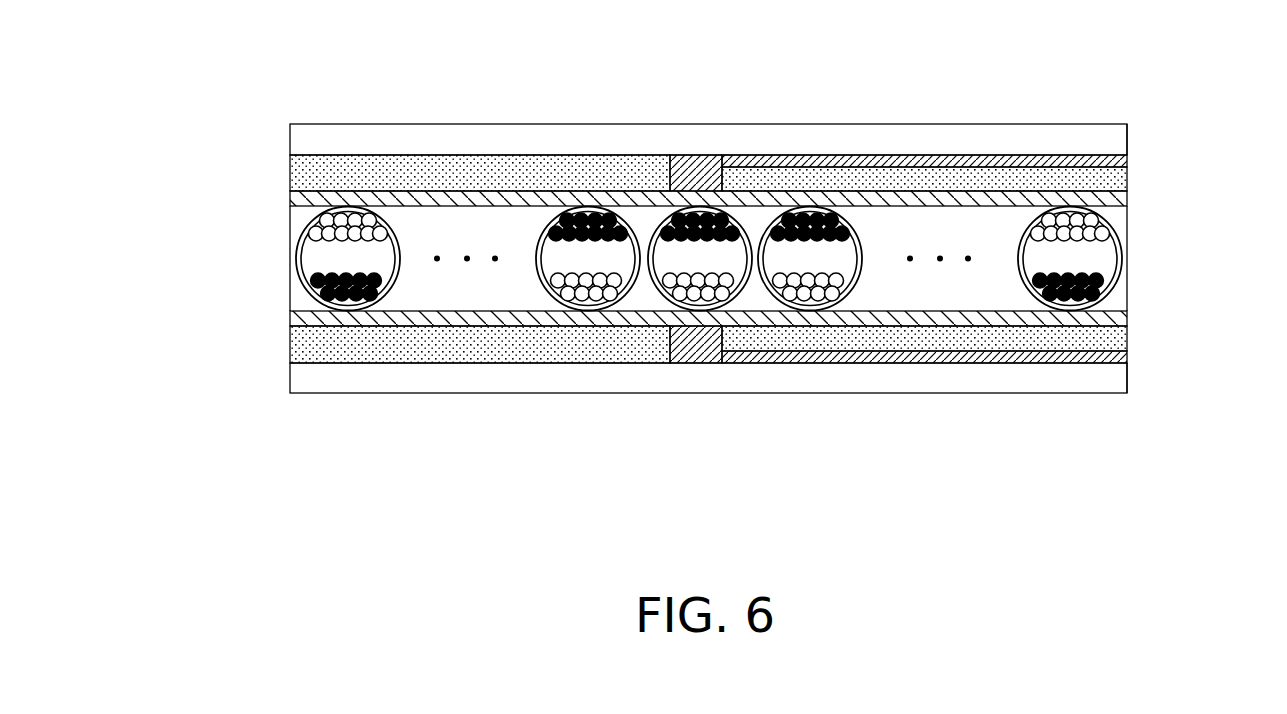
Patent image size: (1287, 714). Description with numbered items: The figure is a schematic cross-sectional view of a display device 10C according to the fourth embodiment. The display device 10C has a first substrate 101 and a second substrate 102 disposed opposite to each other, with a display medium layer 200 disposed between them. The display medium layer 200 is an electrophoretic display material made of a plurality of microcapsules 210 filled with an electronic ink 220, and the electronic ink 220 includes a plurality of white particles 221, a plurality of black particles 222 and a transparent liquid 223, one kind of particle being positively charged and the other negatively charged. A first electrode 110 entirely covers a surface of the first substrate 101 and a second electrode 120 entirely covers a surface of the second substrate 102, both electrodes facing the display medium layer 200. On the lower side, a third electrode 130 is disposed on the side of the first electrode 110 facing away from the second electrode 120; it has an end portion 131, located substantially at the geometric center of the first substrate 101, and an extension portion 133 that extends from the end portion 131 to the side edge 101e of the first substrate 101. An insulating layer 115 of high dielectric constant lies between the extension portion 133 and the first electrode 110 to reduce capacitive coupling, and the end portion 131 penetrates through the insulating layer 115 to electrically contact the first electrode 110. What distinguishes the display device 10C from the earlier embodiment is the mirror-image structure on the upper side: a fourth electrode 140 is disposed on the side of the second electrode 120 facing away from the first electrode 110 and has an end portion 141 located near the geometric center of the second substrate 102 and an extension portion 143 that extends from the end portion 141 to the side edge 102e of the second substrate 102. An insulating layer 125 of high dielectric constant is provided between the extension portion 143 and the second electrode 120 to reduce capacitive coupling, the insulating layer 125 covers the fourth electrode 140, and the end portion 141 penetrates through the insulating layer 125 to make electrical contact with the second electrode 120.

The display device 10C is at (1249, 537).
The first substrate 101 is at (1035, 383).
The side edge of the first substrate 101e is at (1130, 377).
The second substrate 102 is at (1117, 147).
The side edge of the second substrate 102e is at (1130, 127).
The first electrode 110 is at (1117, 318).
The insulating layer 115 is at (1117, 339).
The second electrode 120 is at (1117, 200).
The insulating layer 125 is at (1117, 180).
The third electrode 130 is at (898, 418).
The end portion 131 is at (695, 352).
The extension portion 133 is at (813, 355).
The fourth electrode 140 is at (898, 100).
The end portion 141 is at (695, 168).
The extension portion 143 is at (813, 165).
The display medium layer 200 is at (673, 257).
The microcapsules 210 is at (306, 257).
The electronic ink 220 is at (270, 261).
The white particles 221 is at (310, 237).
The black particles 222 is at (302, 283).
The transparent liquid 223 is at (313, 258).